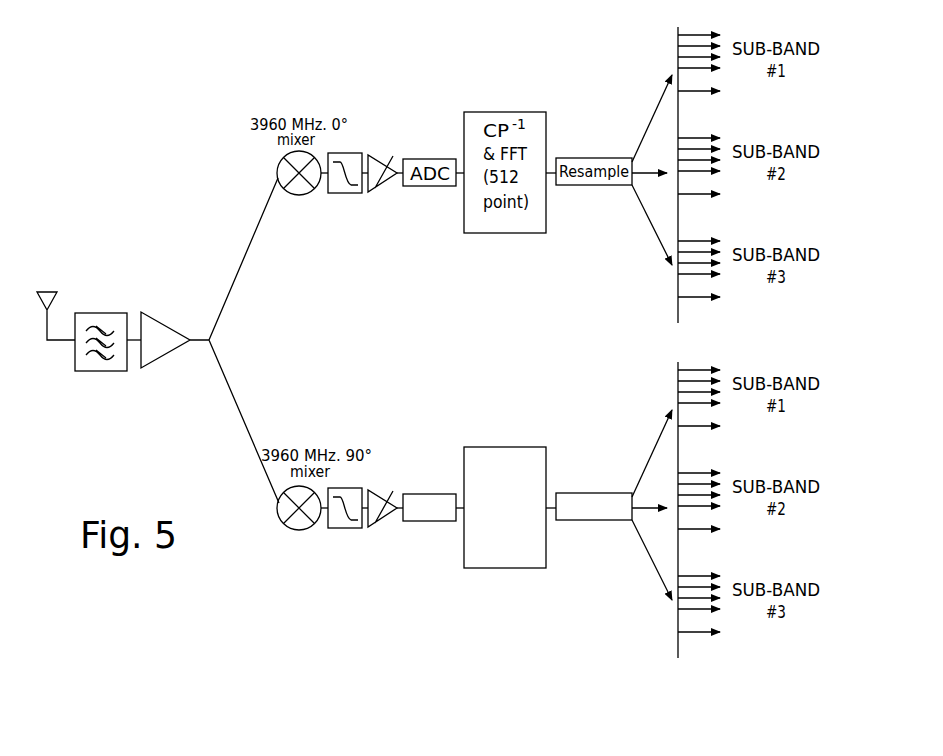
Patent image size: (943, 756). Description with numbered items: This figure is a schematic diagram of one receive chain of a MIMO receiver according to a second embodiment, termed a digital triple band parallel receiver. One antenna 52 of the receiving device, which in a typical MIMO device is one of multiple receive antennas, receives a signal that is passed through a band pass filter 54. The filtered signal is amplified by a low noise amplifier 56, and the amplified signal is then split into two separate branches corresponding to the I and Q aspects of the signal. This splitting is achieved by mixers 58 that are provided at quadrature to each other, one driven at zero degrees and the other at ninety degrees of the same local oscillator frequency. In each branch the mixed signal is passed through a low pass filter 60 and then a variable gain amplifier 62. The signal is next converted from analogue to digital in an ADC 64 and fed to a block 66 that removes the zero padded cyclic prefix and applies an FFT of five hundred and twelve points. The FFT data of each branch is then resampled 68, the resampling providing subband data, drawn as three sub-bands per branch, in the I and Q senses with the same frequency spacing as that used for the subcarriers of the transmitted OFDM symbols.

The antenna 52 is at (48, 318).
The band pass filter 54 is at (97, 313).
The low noise amplifier 56 is at (158, 320).
The mixer 58 is at (290, 528).
The low pass filter 60 is at (345, 529).
The variable gain amplifier 62 is at (386, 530).
The ADC 64 is at (429, 532).
The block 66 is at (505, 523).
The resampling 68 is at (594, 532).